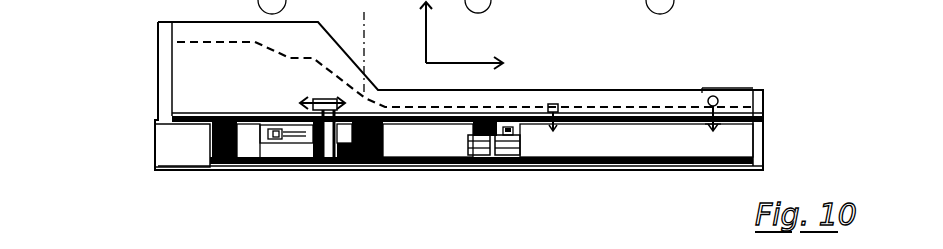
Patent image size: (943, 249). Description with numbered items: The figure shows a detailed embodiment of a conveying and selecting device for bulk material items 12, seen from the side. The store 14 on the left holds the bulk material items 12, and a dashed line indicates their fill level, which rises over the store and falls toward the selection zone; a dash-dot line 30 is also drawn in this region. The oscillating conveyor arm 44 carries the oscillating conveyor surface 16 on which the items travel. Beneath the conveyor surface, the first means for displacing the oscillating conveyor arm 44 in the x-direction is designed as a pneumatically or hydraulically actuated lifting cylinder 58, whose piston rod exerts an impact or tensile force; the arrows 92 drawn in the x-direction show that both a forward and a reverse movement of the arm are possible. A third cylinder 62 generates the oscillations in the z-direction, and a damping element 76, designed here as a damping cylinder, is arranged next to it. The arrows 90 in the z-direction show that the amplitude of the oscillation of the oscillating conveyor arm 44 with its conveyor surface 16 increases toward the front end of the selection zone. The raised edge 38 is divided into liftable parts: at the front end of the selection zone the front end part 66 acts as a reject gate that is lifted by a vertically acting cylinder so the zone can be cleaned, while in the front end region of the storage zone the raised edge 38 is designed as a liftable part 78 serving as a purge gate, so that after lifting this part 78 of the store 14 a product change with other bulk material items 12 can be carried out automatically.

The liftable part 78 is at (168, 77).
The store 14 is at (240, 85).
The reference line 30 is at (370, 47).
The bulk material items 12 is at (466, 34).
The oscillating conveyor surface 16 is at (524, 112).
The oscillating conveyor arm 44 is at (760, 117).
The front end part 66 is at (760, 143).
The arrows 92 is at (327, 167).
The lifting cylinder 58 is at (293, 137).
The third cylinder 62 is at (478, 167).
The damping element 76 is at (515, 167).
The arrows 90 is at (710, 100).
The raised edge 38 is at (725, 98).